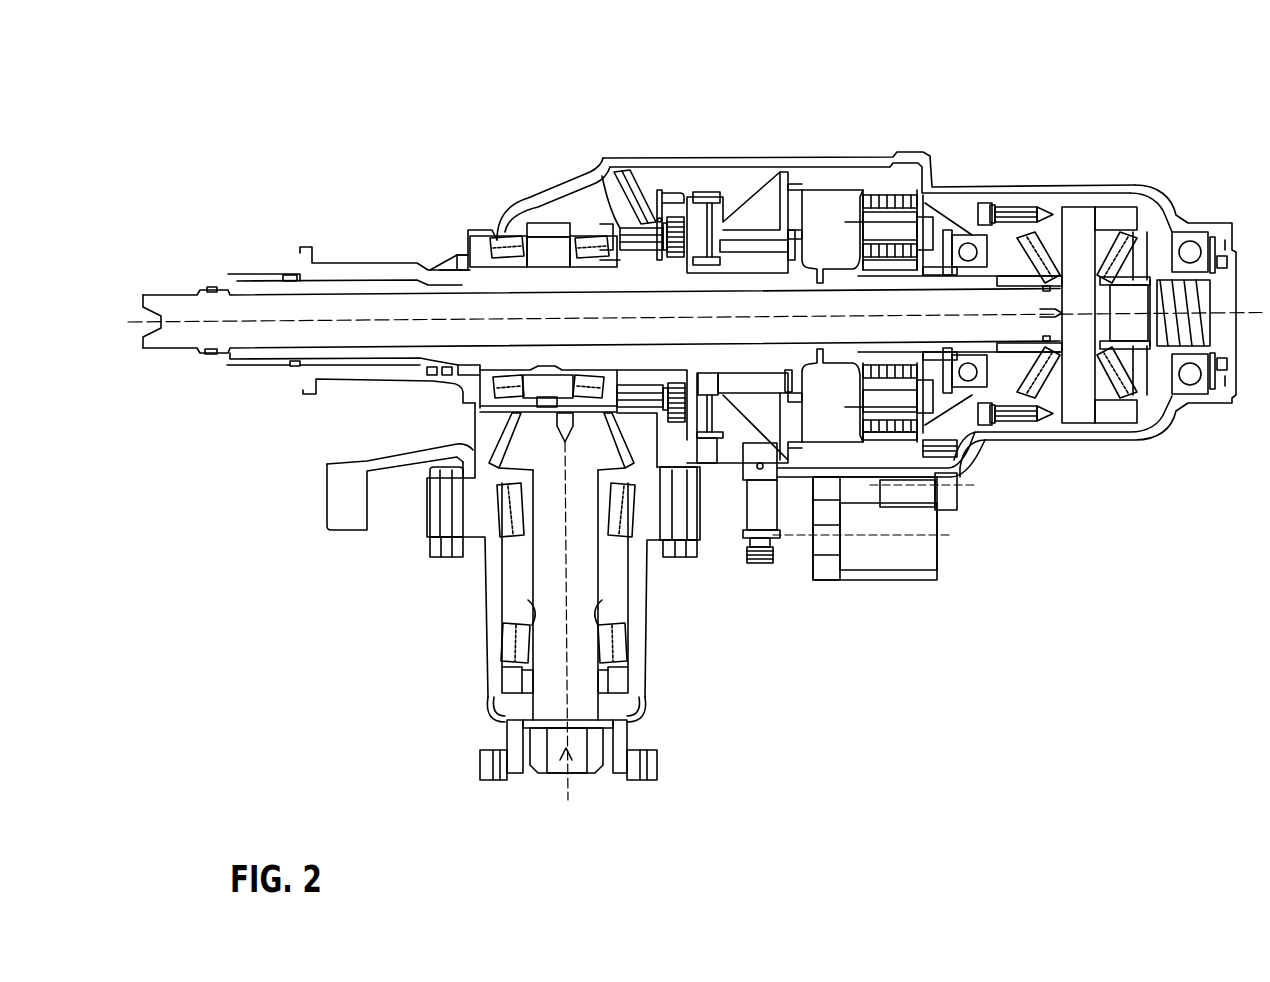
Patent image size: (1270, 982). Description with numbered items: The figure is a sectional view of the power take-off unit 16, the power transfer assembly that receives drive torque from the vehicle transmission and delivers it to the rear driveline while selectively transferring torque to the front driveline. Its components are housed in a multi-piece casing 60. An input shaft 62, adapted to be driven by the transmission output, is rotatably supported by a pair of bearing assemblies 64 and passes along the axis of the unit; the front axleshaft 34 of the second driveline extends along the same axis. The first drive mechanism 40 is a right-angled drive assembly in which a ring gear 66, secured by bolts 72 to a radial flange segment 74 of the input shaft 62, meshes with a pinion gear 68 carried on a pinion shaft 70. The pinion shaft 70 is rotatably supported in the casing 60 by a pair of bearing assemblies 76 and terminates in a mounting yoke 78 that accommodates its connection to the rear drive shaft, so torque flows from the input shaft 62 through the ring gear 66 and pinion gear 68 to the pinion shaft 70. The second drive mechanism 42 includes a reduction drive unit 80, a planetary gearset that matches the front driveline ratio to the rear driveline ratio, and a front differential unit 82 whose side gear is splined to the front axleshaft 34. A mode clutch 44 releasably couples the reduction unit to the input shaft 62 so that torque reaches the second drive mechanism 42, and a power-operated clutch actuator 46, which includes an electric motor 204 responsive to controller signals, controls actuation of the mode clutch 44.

The power take-off unit 16 is at (1048, 76).
The front axleshaft 34 is at (231, 318).
The first drive mechanism 40 is at (566, 167).
The second drive mechanism 42 is at (962, 208).
The mode clutch 44 is at (760, 220).
The clutch actuator 46 is at (727, 512).
The casing 60 is at (480, 582).
The input shaft 62 is at (349, 287).
The bearing assemblies 64 is at (502, 243).
The ring gear 66 is at (673, 193).
The pinion gear 68 is at (505, 440).
The pinion shaft 70 is at (557, 570).
The bolts 72 is at (604, 176).
The radial flange segment 74 is at (695, 192).
The bearing assemblies 76 is at (497, 517).
The mounting yoke 78 is at (513, 765).
The reduction drive unit 80 is at (898, 160).
The front differential unit 82 is at (1148, 222).
The electric motor 204 is at (917, 552).